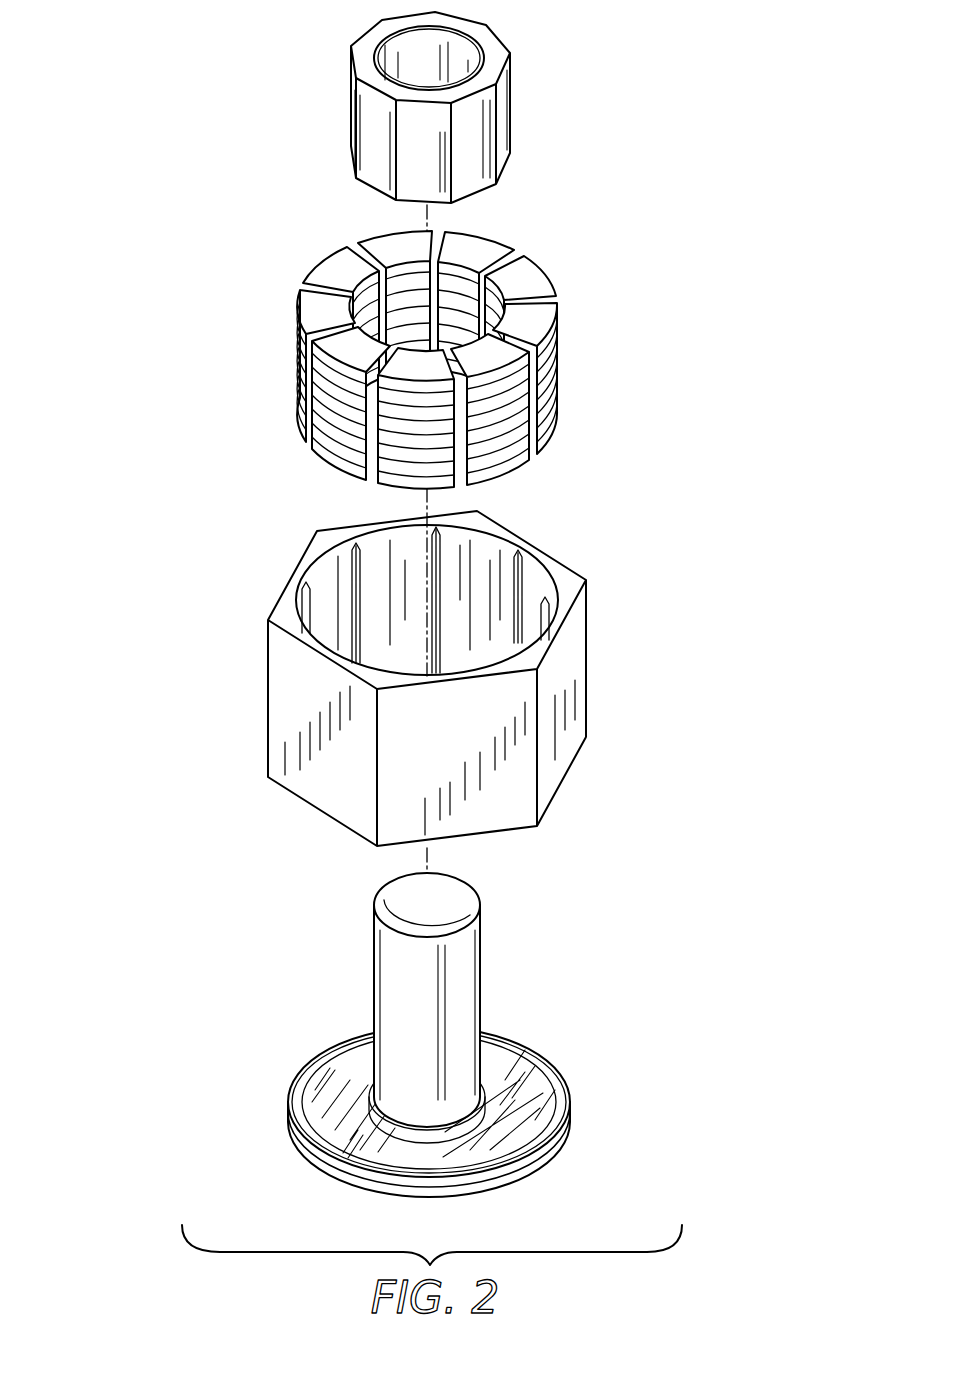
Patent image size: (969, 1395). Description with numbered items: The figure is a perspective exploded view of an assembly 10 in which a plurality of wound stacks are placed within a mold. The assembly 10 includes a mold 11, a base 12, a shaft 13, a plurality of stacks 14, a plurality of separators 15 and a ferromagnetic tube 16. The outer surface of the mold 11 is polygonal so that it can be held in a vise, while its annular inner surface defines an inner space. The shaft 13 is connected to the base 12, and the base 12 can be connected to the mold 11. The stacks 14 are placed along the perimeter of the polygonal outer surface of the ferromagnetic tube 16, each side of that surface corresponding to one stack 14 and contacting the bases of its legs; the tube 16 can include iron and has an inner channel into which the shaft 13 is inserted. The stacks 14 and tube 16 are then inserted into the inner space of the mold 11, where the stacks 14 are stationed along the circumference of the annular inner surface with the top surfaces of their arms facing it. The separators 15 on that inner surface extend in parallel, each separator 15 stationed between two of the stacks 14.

The assembly 10 is at (150, 222).
The mold 11 is at (458, 669).
The base 12 is at (571, 1108).
The shaft 13 is at (478, 960).
The stacks 14 is at (515, 278).
The separators 15 is at (522, 542).
The ferromagnetic tube 16 is at (492, 65).